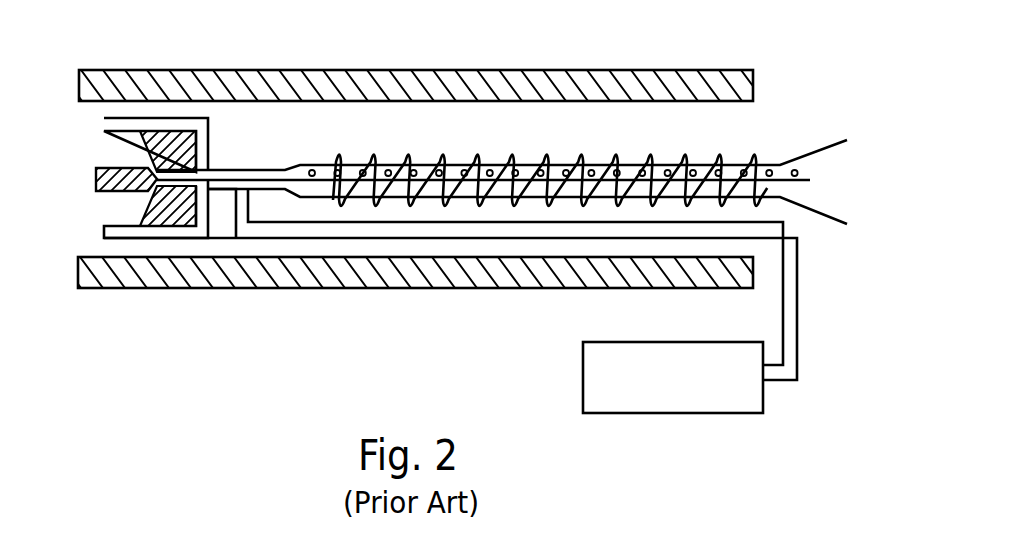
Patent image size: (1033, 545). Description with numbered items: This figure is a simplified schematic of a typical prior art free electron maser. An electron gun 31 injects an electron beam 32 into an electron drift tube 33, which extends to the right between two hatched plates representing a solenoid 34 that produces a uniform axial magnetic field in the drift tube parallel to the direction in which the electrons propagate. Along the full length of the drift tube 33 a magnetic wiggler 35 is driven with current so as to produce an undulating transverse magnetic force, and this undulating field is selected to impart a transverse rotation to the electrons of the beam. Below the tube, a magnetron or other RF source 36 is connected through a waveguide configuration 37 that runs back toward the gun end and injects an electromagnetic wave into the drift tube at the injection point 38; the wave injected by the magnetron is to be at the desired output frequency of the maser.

The electron gun 31 is at (82, 185).
The electron beam 32 is at (292, 166).
The electron drift tube 33 is at (535, 162).
The solenoid 34 is at (390, 70).
The magnetic wiggler 35 is at (370, 152).
The magnetron or other RF source 36 is at (583, 380).
The waveguide configuration 37 is at (798, 258).
The injection point 38 is at (249, 191).